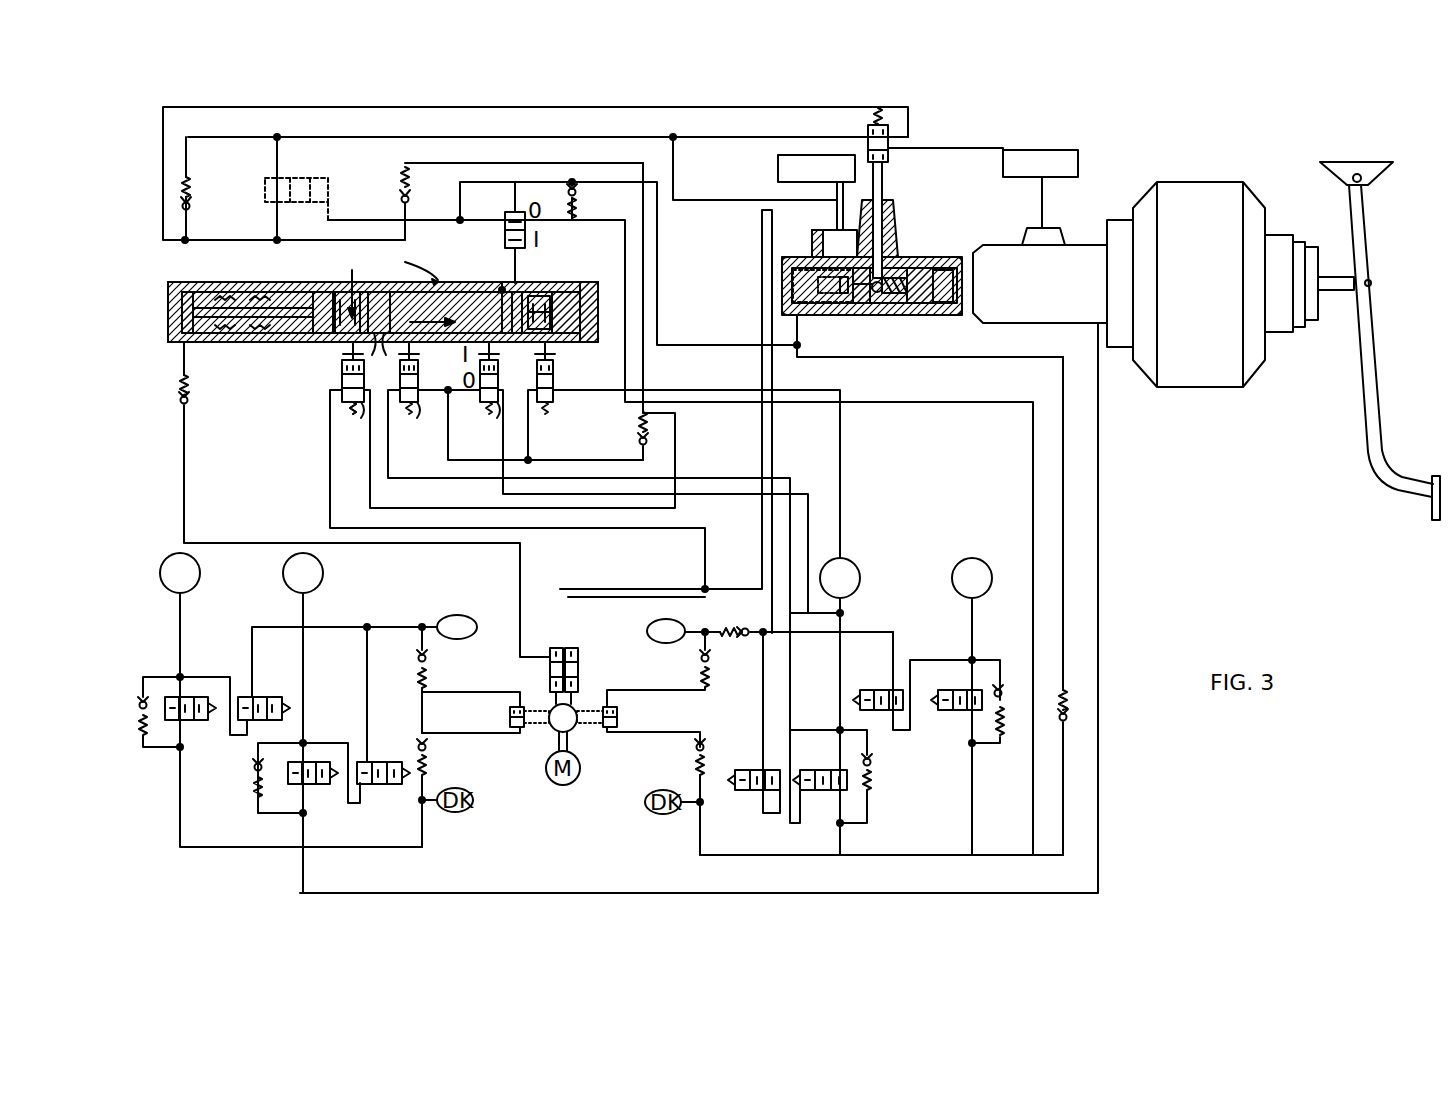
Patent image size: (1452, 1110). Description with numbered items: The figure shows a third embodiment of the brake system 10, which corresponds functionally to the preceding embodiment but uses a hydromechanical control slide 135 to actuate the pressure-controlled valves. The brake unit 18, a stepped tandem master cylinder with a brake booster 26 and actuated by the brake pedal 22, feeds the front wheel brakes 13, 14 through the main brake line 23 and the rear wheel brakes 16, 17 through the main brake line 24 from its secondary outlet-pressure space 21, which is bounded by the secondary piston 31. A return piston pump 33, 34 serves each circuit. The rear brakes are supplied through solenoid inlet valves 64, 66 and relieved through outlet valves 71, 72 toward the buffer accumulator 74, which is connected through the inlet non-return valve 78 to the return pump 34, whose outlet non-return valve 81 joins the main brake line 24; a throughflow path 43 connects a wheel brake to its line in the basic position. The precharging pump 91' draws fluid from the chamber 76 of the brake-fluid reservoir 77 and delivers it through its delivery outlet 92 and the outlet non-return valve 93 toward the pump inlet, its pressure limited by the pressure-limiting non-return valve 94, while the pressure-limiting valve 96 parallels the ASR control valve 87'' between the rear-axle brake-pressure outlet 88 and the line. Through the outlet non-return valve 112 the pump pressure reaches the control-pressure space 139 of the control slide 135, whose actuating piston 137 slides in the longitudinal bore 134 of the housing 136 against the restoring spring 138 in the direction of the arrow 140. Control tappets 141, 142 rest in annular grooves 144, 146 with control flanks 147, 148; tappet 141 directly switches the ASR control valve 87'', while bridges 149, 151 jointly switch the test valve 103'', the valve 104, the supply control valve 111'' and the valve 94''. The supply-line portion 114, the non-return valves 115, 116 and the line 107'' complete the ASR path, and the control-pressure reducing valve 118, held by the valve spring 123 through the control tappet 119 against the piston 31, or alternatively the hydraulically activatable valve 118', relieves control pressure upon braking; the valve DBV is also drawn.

The brake system 10 is at (1094, 202).
The wheel brake 13 is at (200, 570).
The wheel brake 14 is at (283, 573).
The wheel brake 16 is at (860, 572).
The wheel brake 17 is at (952, 575).
The brake unit 18 is at (978, 252).
The secondary outlet-pressure space 21 is at (800, 270).
The brake pedal 22 is at (1368, 432).
The main brake line 23 is at (1100, 525).
The main brake line 24 is at (1063, 515).
The brake booster 26 is at (1213, 187).
The secondary piston 31 is at (882, 293).
The return piston pump 33 is at (518, 728).
The return piston pump 34 is at (588, 728).
The throughflow path 43 is at (792, 640).
The solenoid inlet valve 64 is at (830, 792).
The solenoid inlet valve 66 is at (955, 712).
The outlet valve 71 is at (750, 792).
The outlet valve 72 is at (878, 690).
The buffer accumulator 74 is at (648, 632).
The chamber 76 is at (778, 165).
The brake-fluid reservoir 77 is at (1003, 150).
The inlet non-return valve 78 is at (698, 660).
The outlet non-return valve 81 is at (696, 745).
The ASR control valve 87'' is at (493, 232).
The rear-axle brake-pressure outlet 88 is at (800, 345).
The precharging pump 91' is at (635, 650).
The delivery outlet 92 is at (550, 652).
The outlet non-return valve 93 is at (410, 197).
The pressure-limiting non-return valve 94 is at (207, 188).
The solenoid valve 94'' is at (577, 378).
The pressure-limiting valve 96 is at (1067, 708).
The test valve 103'' is at (477, 391).
The hydraulically activated valve 104 is at (426, 421).
The line 107'' is at (535, 193).
The supply control valve 111'' is at (323, 380).
The outlet non-return valve 112 is at (190, 398).
The supply-line portion 114 is at (330, 468).
The non-return valve 115 is at (638, 440).
The non-return valve 116 is at (743, 640).
The control-pressure reducing valve 118 is at (935, 139).
The hydraulically activatable control-pressure reducing valve 118' is at (317, 188).
The control tappet 119 is at (580, 197).
The valve spring 123 is at (873, 118).
The longitudinal bore 134 is at (575, 292).
The control slide 135 is at (414, 263).
The housing 136 is at (455, 280).
The actuating piston 137 is at (368, 280).
The restoring spring 138 is at (240, 333).
The control-pressure space 139 is at (190, 292).
The arrow 140 is at (445, 322).
The control tappet 141 is at (525, 280).
The control tappet 142 is at (539, 333).
The annular groove 144 is at (640, 313).
The annular groove 146 is at (398, 343).
The control flank 147 is at (502, 288).
The control flank 148 is at (337, 338).
The bridge 149 is at (519, 449).
The bridge 151 is at (361, 422).
The pressure limiting valve DBV is at (1068, 735).